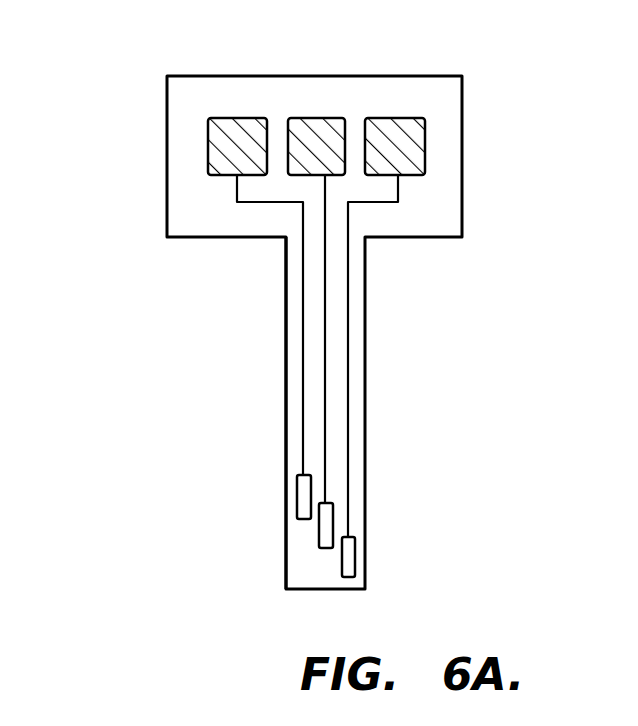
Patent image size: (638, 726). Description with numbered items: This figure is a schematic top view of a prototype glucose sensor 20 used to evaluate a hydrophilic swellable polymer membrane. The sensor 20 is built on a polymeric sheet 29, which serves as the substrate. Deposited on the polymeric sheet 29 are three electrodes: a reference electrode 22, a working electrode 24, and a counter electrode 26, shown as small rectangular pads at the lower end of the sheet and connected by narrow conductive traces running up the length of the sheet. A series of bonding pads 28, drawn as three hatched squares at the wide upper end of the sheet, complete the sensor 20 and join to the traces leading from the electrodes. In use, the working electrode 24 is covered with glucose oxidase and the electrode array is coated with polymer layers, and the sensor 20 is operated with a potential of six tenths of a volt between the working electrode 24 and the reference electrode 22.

The sensor 20 is at (162, 346).
The reference electrode 22 is at (297, 502).
The working electrode 24 is at (318, 535).
The counter electrode 26 is at (348, 565).
The bonding pads 28 is at (265, 120).
The polymeric sheet 29 is at (368, 430).